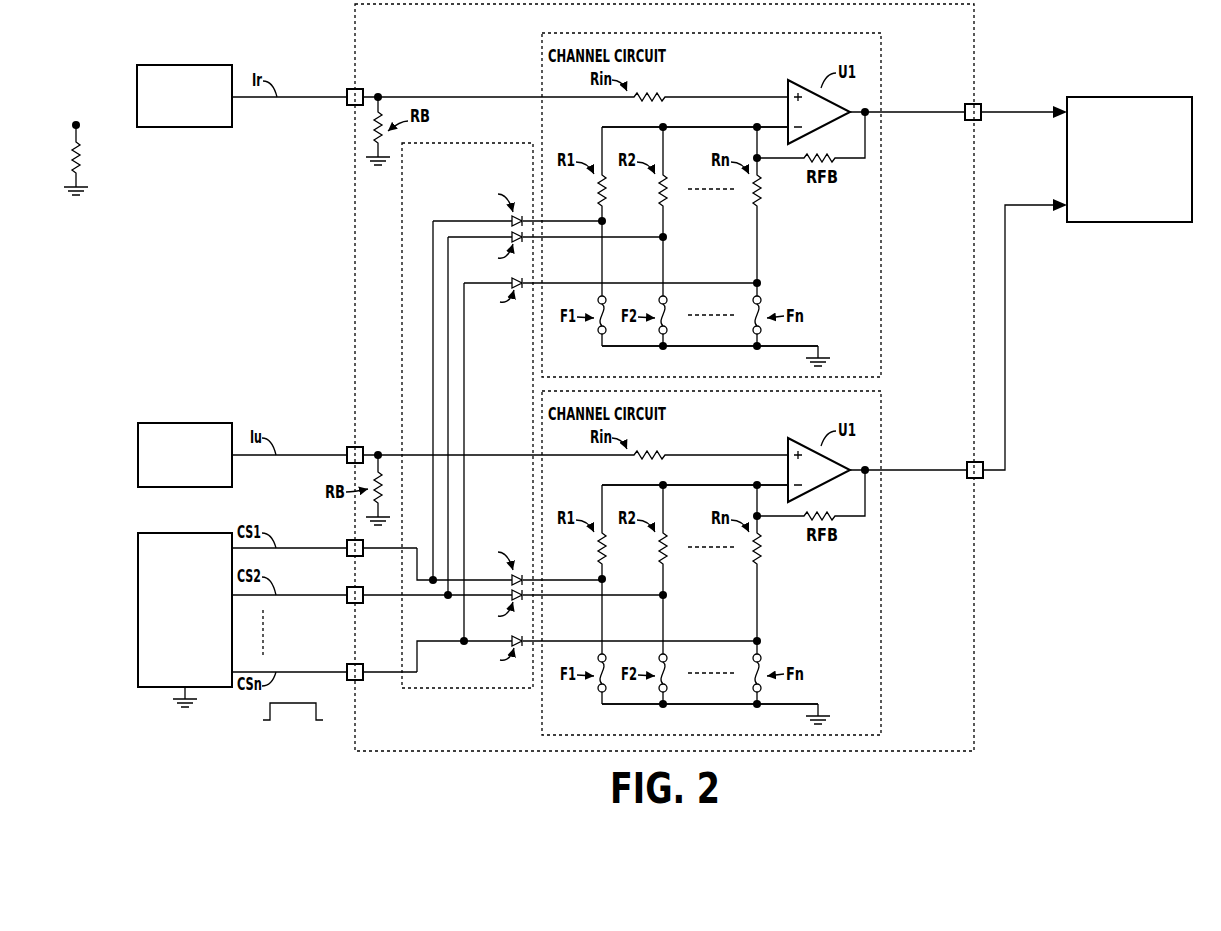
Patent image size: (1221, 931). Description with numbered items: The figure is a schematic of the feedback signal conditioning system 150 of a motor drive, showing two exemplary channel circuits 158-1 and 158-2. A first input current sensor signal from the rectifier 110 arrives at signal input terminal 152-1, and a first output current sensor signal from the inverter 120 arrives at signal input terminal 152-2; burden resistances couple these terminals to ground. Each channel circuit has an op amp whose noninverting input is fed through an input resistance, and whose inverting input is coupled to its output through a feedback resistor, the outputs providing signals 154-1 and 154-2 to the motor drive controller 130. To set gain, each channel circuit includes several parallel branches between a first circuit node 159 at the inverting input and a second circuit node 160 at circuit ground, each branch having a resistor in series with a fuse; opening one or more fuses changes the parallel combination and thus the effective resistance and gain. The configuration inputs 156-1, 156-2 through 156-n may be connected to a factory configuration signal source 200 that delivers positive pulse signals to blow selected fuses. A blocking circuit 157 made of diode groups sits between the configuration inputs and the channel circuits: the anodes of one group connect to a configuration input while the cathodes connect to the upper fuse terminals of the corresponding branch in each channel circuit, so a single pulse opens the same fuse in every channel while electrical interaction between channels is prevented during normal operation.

The rectifier 110 is at (184, 65).
The inverter 120 is at (184, 423).
The motor drive controller 130 is at (1131, 97).
The feedback signal conditioning system 150 is at (355, 25).
The signal input terminal 152-1 is at (337, 88).
The signal input terminal 152-2 is at (337, 446).
The output signal 154-1 is at (957, 99).
The output signal 154-2 is at (957, 459).
The configuration input 156-1 is at (338, 540).
The configuration input 156-2 is at (338, 585).
The configuration input 156-n is at (338, 663).
The blocking circuit 157 is at (460, 143).
The channel circuit 158-1 is at (541, 54).
The channel circuit 158-2 is at (541, 413).
The first circuit node 159 is at (617, 127).
The second circuit node 160 is at (616, 346).
The factory configuration signal source 200 is at (184, 533).